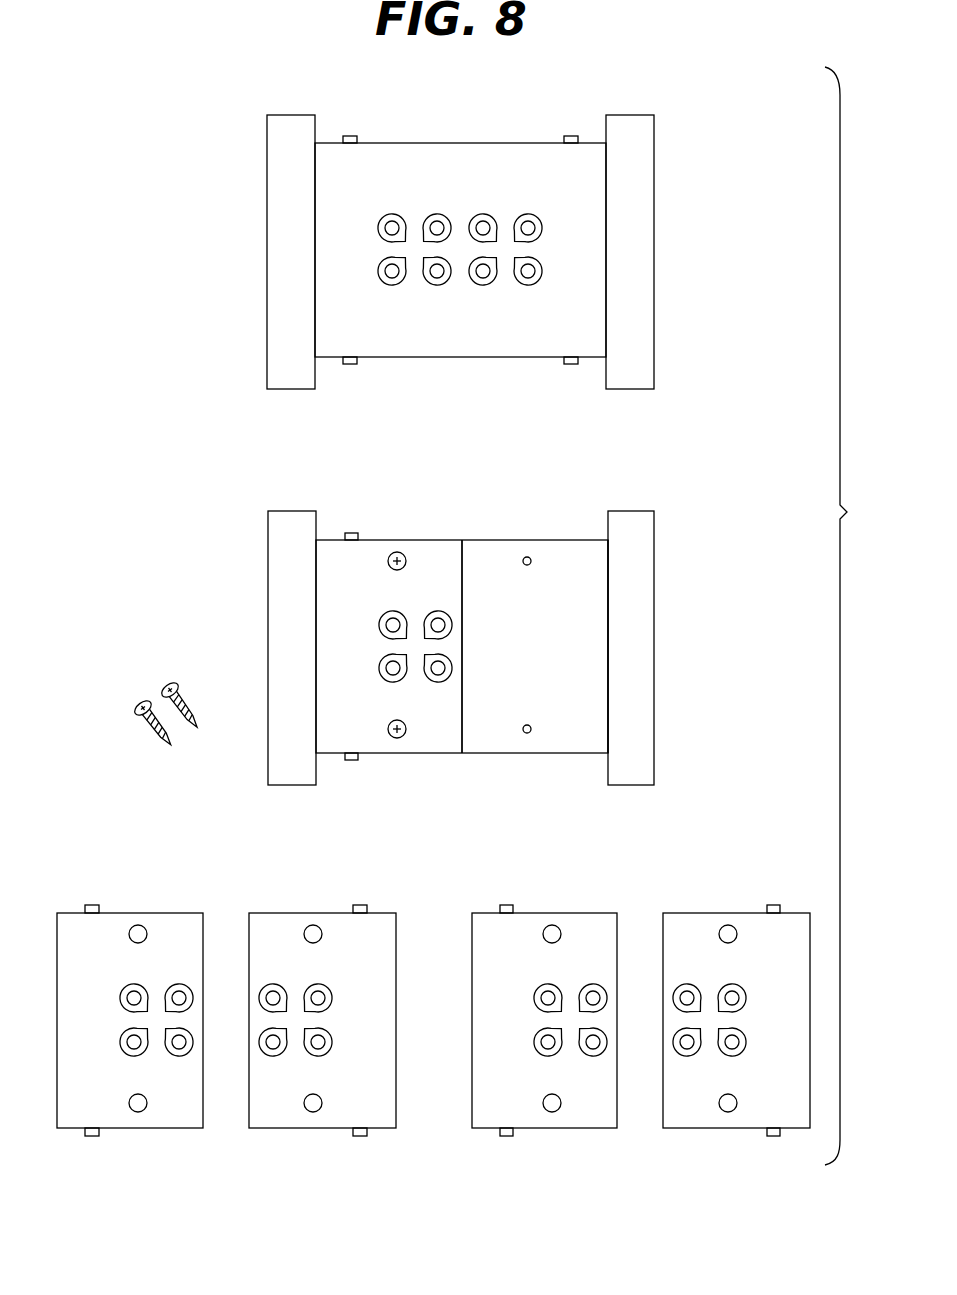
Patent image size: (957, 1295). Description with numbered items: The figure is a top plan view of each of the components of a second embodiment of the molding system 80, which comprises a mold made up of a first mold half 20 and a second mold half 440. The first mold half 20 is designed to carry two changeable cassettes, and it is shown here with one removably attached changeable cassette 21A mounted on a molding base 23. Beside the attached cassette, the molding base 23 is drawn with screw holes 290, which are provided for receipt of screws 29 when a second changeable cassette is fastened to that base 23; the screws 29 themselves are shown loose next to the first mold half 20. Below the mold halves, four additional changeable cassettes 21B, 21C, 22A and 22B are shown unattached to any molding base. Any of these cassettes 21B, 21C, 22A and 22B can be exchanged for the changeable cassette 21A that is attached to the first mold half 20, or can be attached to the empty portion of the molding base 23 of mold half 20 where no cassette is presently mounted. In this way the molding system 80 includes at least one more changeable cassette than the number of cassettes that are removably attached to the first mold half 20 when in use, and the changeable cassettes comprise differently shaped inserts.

The second mold half 440 is at (280, 227).
The first mold half 20 is at (285, 553).
The changeable cassette 21A is at (425, 740).
The molding base 23 is at (622, 765).
The screw holes 290 is at (527, 556).
The screws 29 is at (403, 554).
The changeable cassette 21B is at (170, 1113).
The changeable cassette 21C is at (342, 1112).
The changeable cassette 22A is at (583, 1115).
The changeable cassette 22B is at (703, 1112).
The molding system 80 is at (855, 616).